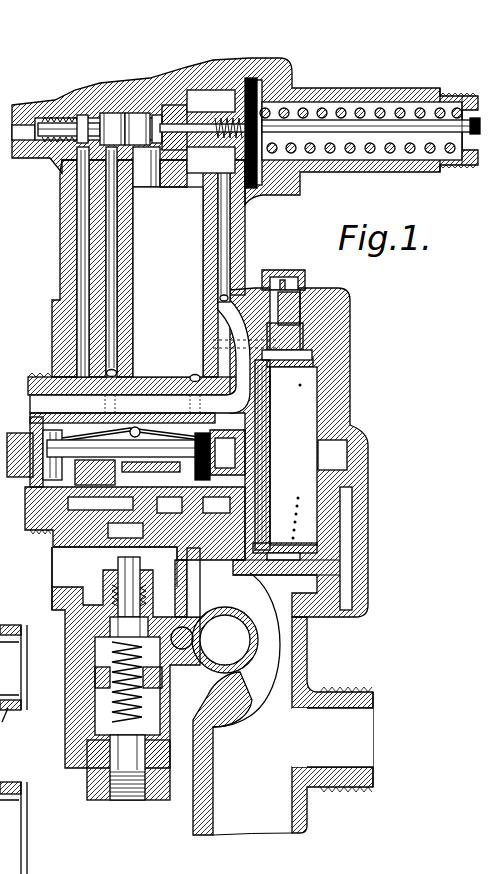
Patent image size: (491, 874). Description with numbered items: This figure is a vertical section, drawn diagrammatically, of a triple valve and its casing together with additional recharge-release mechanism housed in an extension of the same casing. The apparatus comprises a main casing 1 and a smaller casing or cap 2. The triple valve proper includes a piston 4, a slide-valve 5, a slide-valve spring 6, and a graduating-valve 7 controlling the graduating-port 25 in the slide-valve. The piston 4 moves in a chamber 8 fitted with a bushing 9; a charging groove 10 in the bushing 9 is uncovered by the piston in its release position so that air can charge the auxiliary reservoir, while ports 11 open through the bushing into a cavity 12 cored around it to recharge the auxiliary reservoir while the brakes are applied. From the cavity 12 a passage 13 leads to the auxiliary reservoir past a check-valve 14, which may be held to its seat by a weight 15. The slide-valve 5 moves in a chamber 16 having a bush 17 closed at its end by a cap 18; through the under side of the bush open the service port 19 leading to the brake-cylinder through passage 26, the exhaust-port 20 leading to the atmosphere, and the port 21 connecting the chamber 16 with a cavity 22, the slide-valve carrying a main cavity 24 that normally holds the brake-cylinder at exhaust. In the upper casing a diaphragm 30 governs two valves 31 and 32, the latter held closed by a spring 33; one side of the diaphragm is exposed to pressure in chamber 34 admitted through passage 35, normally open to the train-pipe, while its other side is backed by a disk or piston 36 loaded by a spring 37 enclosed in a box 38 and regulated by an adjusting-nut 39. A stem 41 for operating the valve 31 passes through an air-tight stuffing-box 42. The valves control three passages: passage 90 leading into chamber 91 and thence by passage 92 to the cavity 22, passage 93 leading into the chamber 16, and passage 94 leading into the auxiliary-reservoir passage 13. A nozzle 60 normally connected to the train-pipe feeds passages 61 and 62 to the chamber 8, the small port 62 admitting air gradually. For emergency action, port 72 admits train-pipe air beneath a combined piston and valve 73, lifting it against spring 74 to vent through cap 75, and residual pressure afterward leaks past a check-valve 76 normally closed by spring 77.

The main casing 1 is at (195, 833).
The smaller casing or cap 2 is at (350, 397).
The piston 4 is at (270, 418).
The slide-valve 5 is at (30, 503).
The slide-valve spring 6 is at (100, 428).
The graduating-valve 7 is at (6, 724).
The chamber 8 is at (293, 456).
The bushing 9 is at (296, 545).
The charging groove or passage 10 is at (270, 368).
The ports 11 is at (296, 498).
The cavity 12 is at (276, 570).
The passage 13 is at (37, 405).
The check-valve 14 is at (345, 322).
The weight 15 is at (305, 290).
The chamber 16 is at (232, 440).
The bush 17 is at (165, 440).
The cap 18 is at (30, 428).
The service port 19 is at (100, 505).
The exhaust-port 20 is at (169, 505).
The port 21 is at (208, 468).
The cavity 22 is at (216, 505).
The main cavity 24 is at (71, 698).
The graduating-port 25 is at (68, 550).
The passage 26 is at (52, 565).
The diaphragm 30 is at (236, 100).
The valve 31 is at (138, 113).
The valve 32 is at (106, 113).
The spring 33 is at (48, 108).
The chamber 34 is at (203, 145).
The passage 35 is at (322, 360).
The disk or piston 36 is at (292, 125).
The spring 37 is at (362, 110).
The box 38 is at (395, 95).
The adjusting-nut 39 is at (445, 100).
The stem 41 is at (176, 160).
The air-tight bushing or stuffing-box 42 is at (172, 108).
The nozzle 60 is at (332, 737).
The passage 61 is at (345, 555).
The small port 62 is at (360, 487).
The port 72 is at (214, 640).
The combined piston and valve 73 is at (150, 704).
The spring 74 is at (150, 680).
The cap 75 is at (152, 800).
The check-valve 76 is at (150, 615).
The spring 77 is at (112, 598).
The passage 90 is at (154, 178).
The cavity or chamber 91 is at (168, 282).
The passage 92 is at (200, 550).
The passage 93 is at (112, 326).
The passage 94 is at (83, 258).